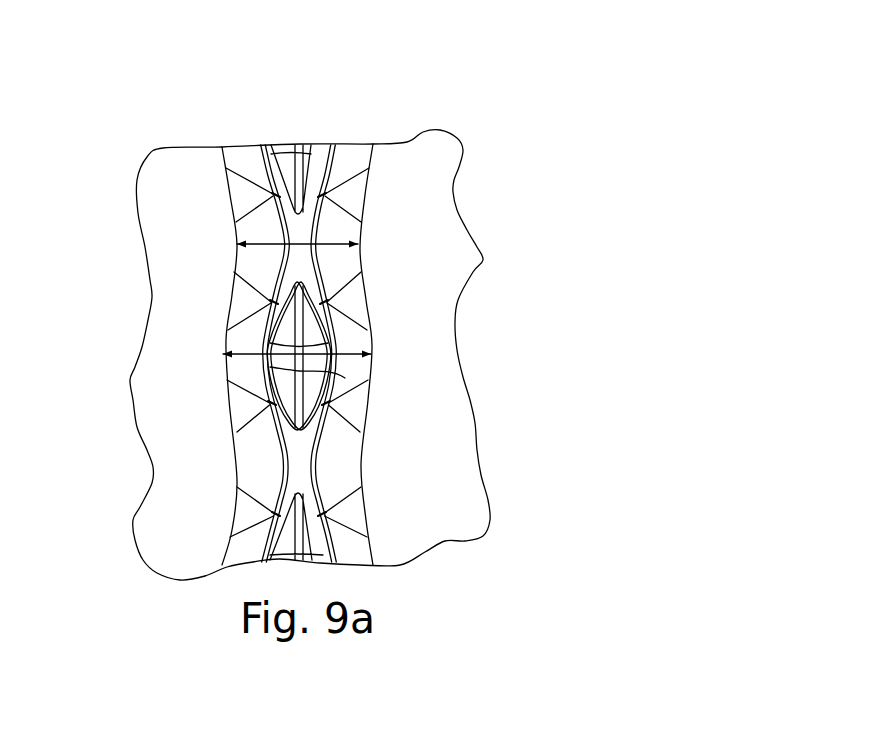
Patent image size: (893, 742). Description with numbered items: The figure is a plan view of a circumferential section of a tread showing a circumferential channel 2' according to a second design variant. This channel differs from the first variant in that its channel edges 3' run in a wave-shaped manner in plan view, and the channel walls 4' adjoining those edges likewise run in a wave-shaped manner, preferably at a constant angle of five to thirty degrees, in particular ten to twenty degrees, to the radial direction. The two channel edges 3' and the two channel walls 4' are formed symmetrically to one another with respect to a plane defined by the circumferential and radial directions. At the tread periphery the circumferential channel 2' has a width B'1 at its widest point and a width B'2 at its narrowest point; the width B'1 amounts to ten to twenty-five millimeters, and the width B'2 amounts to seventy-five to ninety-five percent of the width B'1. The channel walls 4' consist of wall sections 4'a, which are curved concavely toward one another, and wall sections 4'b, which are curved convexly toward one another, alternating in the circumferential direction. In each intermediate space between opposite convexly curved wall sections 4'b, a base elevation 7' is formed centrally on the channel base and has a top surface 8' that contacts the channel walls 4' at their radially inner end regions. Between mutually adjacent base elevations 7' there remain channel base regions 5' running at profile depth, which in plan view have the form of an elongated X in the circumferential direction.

The circumferential channel 2' is at (310, 322).
The channel edge 3' is at (413, 354).
The channel wall 4' is at (185, 356).
The wall section 4'a is at (196, 241).
The wall section 4'b is at (196, 363).
The channel base region 5' is at (216, 353).
The base elevation 7' is at (357, 336).
The top surface 8' is at (371, 411).
The width B'1 is at (297, 344).
The width B'2 is at (333, 170).